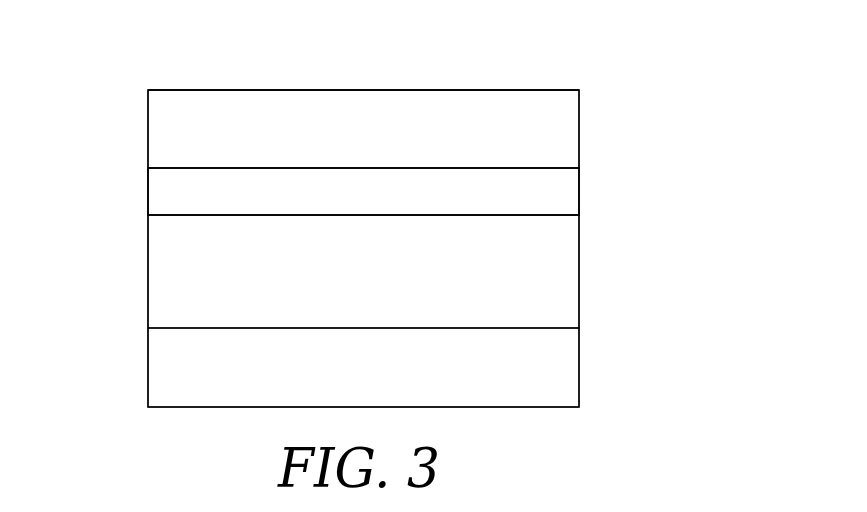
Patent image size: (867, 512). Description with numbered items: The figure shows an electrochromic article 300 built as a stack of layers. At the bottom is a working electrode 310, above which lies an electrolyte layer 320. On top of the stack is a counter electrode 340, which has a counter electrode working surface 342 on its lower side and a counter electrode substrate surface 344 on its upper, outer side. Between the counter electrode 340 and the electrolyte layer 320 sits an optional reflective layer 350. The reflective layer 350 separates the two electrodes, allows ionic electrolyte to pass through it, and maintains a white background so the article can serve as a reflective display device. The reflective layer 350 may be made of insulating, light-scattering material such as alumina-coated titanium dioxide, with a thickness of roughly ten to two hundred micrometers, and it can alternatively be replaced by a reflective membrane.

The electrochromic article 300 is at (486, 50).
The working electrode 310 is at (568, 367).
The electrolyte layer 320 is at (172, 275).
The counter electrode 340 is at (160, 123).
The counter electrode working surface 342 is at (177, 170).
The counter electrode substrate surface 344 is at (185, 88).
The reflective layer 350 is at (568, 185).